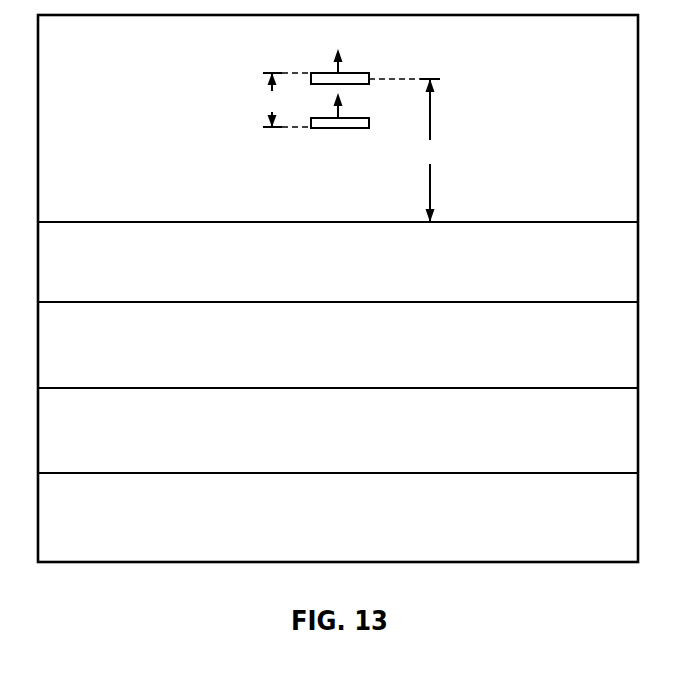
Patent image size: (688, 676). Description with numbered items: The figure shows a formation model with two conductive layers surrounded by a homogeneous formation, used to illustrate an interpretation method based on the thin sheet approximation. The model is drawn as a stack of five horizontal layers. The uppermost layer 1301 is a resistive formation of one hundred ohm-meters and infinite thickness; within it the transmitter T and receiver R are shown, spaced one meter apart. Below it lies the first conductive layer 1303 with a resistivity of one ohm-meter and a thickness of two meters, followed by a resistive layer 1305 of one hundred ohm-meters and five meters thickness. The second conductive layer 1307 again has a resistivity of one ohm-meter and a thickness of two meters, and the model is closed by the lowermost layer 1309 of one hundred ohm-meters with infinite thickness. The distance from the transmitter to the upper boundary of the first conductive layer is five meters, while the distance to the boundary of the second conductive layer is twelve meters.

The first layer 1301 is at (588, 105).
The second layer 1303 is at (588, 274).
The third layer 1305 is at (588, 358).
The fourth layer 1307 is at (588, 445).
The fifth layer 1309 is at (588, 530).